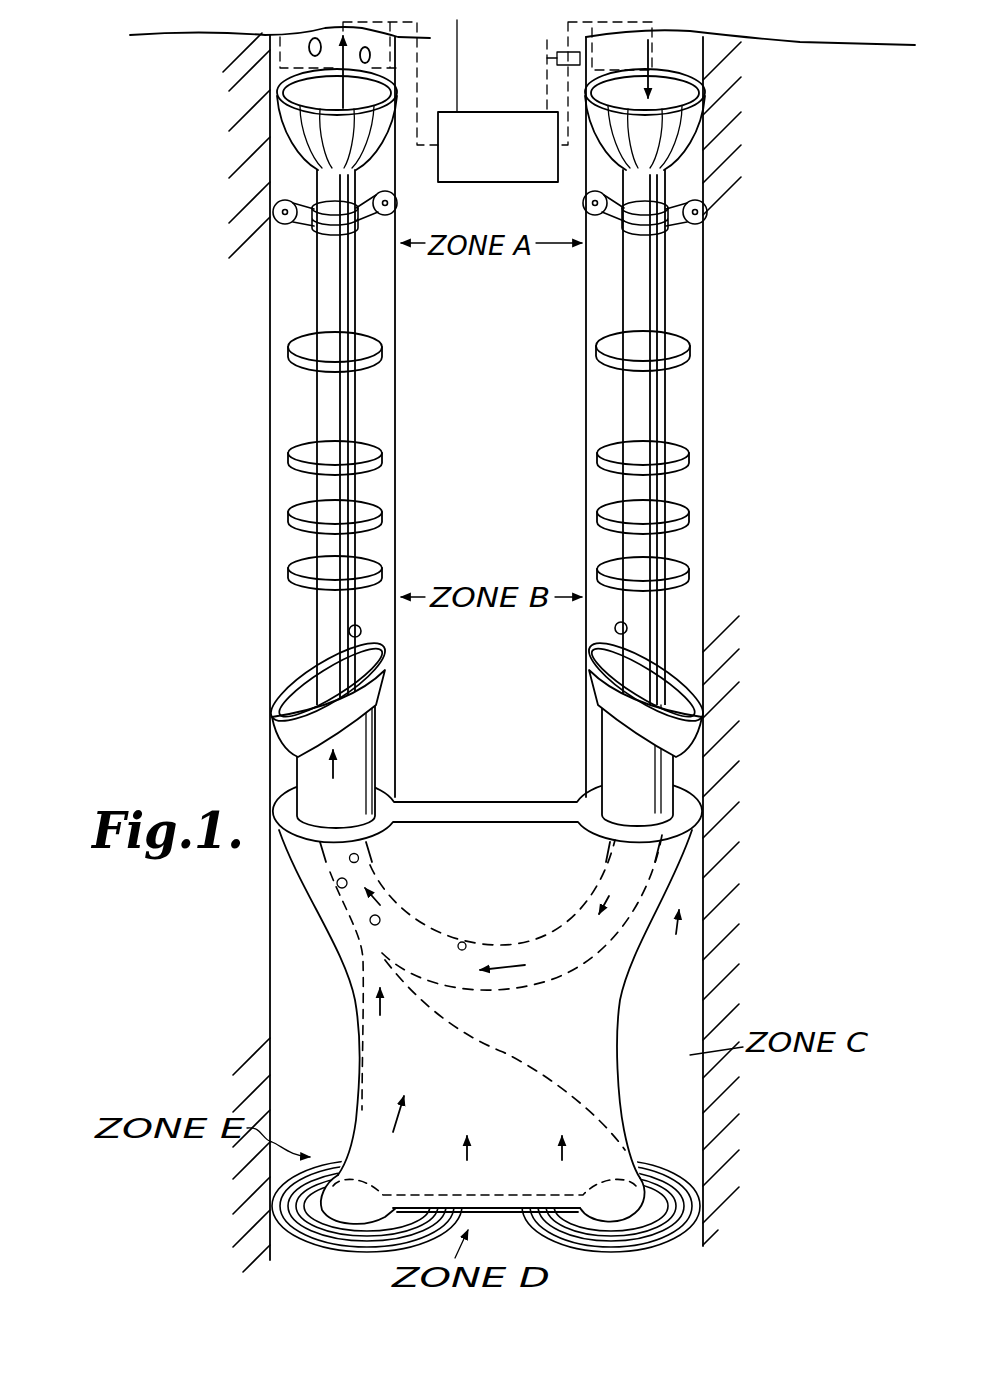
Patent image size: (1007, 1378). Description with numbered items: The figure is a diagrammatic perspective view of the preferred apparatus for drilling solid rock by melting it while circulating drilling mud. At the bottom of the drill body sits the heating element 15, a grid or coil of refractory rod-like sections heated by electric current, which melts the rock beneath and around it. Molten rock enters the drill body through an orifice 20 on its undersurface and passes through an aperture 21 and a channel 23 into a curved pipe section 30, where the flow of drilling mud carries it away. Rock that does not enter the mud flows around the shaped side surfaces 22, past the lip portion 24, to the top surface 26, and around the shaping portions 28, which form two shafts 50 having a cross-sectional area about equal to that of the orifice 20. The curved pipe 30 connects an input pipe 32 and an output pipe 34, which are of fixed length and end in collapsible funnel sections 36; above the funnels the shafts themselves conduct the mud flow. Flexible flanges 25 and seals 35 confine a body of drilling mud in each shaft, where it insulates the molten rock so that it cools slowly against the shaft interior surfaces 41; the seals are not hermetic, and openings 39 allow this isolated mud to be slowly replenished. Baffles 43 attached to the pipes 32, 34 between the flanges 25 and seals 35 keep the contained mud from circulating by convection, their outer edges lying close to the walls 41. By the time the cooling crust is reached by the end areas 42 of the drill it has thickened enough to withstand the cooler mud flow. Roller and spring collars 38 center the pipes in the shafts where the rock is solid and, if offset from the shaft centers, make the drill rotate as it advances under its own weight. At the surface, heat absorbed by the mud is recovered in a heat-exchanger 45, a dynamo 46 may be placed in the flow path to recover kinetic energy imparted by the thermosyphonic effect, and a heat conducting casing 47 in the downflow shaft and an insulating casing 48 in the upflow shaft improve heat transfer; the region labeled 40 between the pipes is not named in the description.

The heating element 15 is at (707, 1243).
The orifice 20 is at (375, 1185).
The aperture 21 is at (370, 922).
The shaped side surfaces 22 is at (628, 1003).
The channel 23 is at (387, 1068).
The lip portion 24 is at (493, 833).
The flexible flanges 25 is at (387, 682).
The top surface 26 is at (475, 808).
The shaping portions 28 is at (362, 757).
The curved pipe section 30 is at (465, 943).
The input pipe 32 is at (652, 422).
The output pipe 34 is at (328, 400).
The seals 35 is at (303, 350).
The collapsible funnel sections 36 is at (266, 90).
The roller and spring collars 38 is at (397, 212).
The openings 39 is at (362, 633).
The central space between tubes 40 is at (527, 513).
The interior surface of shaft 41 is at (718, 607).
The end areas 42 is at (258, 270).
The baffles 43 is at (298, 570).
The heat-exchanger 45 is at (510, 112).
The dynamo 46 is at (557, 57).
The heat conducting casing 47 is at (708, 62).
The insulating casing 48 is at (278, 44).
The shafts 50 is at (294, 315).